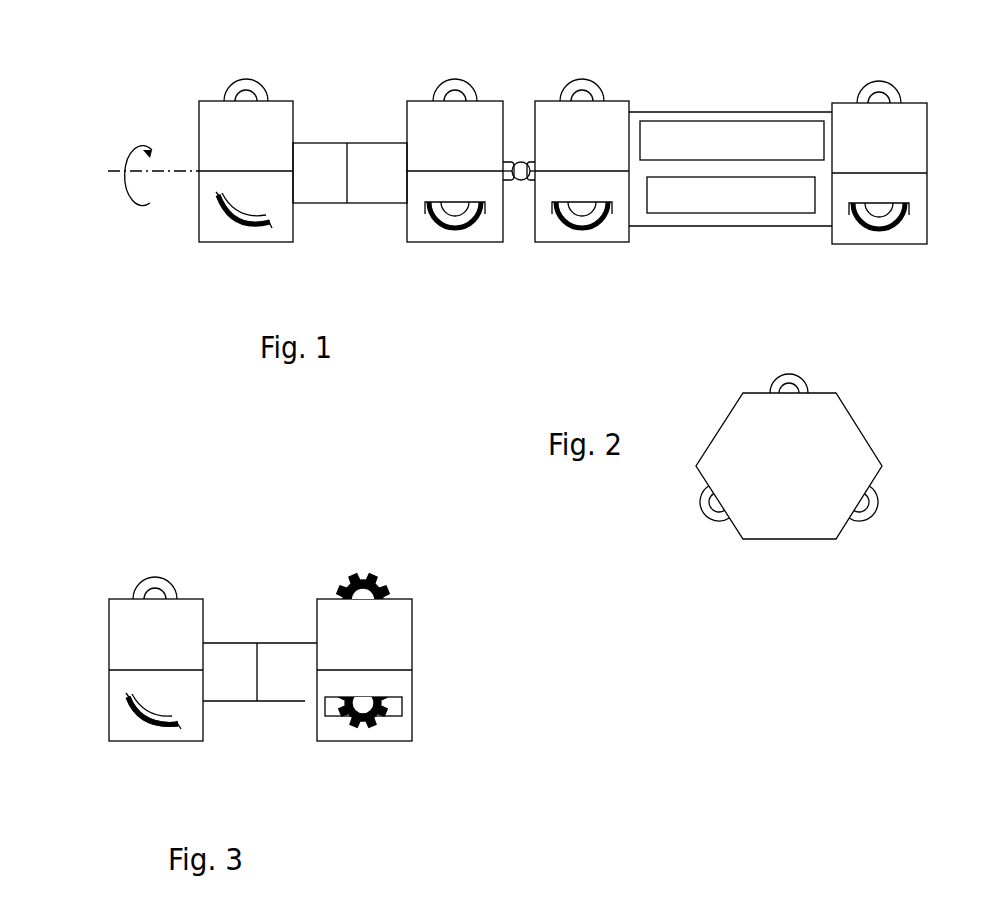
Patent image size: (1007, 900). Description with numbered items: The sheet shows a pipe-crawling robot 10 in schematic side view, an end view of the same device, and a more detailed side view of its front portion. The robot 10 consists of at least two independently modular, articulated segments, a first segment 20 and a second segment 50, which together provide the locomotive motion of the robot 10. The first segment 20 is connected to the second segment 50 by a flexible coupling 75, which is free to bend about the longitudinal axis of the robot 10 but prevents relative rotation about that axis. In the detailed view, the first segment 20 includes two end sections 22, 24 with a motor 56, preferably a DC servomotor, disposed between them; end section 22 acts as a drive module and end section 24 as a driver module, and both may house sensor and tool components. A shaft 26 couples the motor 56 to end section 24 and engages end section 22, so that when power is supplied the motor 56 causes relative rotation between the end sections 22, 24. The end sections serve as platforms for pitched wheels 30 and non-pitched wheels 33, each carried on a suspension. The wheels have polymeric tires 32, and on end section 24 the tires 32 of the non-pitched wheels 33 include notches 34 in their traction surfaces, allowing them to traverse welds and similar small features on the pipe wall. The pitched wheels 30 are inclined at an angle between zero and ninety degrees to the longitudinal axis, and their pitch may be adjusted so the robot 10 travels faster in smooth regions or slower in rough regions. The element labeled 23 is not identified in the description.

In FIG. 1, the pipe-crawling robot 10 is at (352, 60).
In FIG. 1, the first segment 20 is at (362, 268).
In FIG. 2, the first segment 20 is at (878, 449).
In FIG. 3, the first segment 20 is at (285, 790).
In FIG. 1, the end section 22 is at (250, 243).
In FIG. 2, the end section 22 is at (845, 415).
In FIG. 3, the end section 22 is at (108, 700).
In FIG. 3, the friction pad 23 is at (130, 708).
In FIG. 3, the end section 24 is at (412, 684).
In FIG. 3, the shaft 26 is at (222, 652).
In FIG. 2, the pitched wheels 30 is at (880, 492).
In FIG. 3, the pitched wheels 30 is at (158, 580).
In FIG. 3, the polymeric tires 32 is at (365, 572).
In FIG. 3, the non-pitched wheels 33 is at (353, 728).
In FIG. 3, the notches 34 is at (375, 577).
In FIG. 1, the second segment 50 is at (695, 263).
In FIG. 3, the motor 56 is at (272, 652).
In FIG. 1, the flexible coupling 75 is at (518, 160).